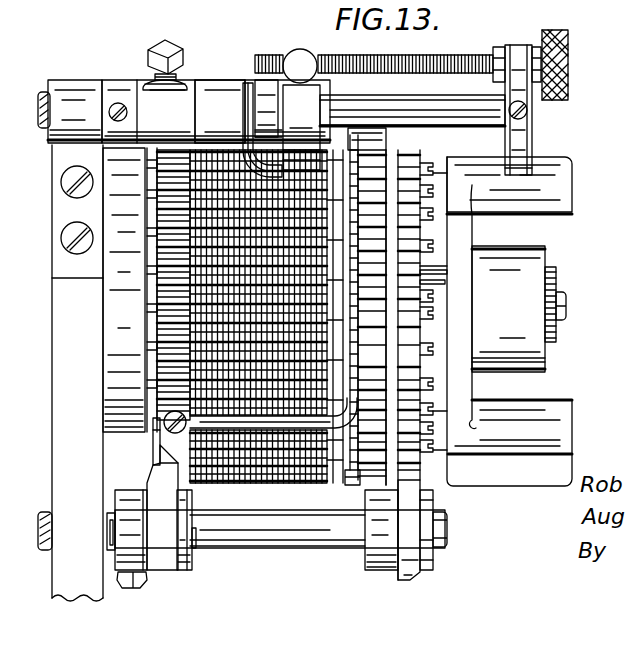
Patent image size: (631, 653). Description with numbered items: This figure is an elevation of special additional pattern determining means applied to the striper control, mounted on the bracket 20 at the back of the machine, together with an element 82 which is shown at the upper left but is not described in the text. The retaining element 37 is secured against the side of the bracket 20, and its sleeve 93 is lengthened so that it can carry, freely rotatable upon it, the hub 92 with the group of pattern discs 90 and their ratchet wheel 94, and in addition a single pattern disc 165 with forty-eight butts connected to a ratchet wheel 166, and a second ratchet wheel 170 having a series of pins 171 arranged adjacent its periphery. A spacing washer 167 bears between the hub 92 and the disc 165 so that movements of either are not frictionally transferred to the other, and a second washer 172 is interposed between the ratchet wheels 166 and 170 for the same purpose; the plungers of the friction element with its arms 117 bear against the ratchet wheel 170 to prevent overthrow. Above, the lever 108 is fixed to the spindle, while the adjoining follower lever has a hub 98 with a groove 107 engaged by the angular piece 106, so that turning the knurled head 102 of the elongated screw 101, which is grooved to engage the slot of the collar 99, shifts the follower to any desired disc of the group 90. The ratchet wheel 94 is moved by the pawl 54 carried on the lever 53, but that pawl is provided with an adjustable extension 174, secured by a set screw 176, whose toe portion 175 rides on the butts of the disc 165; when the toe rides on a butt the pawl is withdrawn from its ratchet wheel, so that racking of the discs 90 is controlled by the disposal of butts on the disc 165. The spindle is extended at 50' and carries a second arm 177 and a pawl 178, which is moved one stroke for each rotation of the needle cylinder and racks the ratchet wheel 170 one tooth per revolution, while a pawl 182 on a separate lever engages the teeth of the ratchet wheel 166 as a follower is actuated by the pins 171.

The bracket 20 is at (70, 346).
The shaft bearing block 82 is at (70, 93).
The lever 108 is at (216, 91).
The hub 98 is at (198, 90).
The angular piece 106 is at (250, 124).
The groove 107 is at (252, 93).
The elongated screw 101 is at (260, 60).
The spacing washer 167 is at (340, 145).
The pattern disc 165 is at (358, 135).
The pawl 182 is at (372, 140).
The pins 171 is at (426, 168).
The collar 99 is at (512, 55).
The knurled head 102 is at (568, 74).
The friction element arms 117 is at (460, 231).
The sleeve 93 is at (440, 276).
The ratchet wheel 170 is at (412, 297).
The ratchet wheel 94 is at (166, 173).
The retaining element 37 is at (130, 290).
The set screw 176 is at (176, 412).
The toe portion 175 is at (345, 418).
The washer 172 is at (393, 453).
The ratchet wheel 166 is at (372, 455).
The hub 92 is at (336, 468).
The pattern discs 90 is at (257, 480).
The extension 174 is at (156, 432).
The pawl 54 is at (192, 492).
The extended spindle 50' is at (276, 545).
The lever 53 is at (145, 572).
The arm 177 is at (380, 570).
The pawl 178 is at (418, 546).